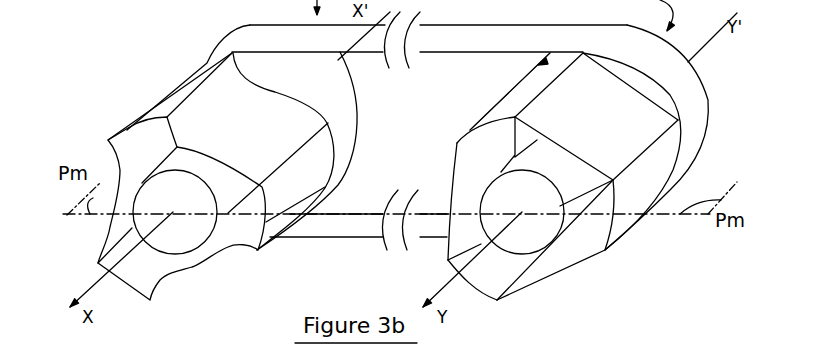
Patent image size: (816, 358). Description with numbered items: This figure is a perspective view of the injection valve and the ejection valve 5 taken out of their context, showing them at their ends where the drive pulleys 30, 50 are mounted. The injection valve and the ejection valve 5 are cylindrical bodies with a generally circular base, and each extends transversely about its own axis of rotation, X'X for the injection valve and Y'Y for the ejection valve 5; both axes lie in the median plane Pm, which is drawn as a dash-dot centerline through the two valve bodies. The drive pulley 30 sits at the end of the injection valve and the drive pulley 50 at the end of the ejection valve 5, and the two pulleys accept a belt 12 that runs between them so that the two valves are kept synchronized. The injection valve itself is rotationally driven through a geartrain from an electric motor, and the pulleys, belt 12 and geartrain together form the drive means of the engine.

The ejection valve 5 is at (483, 82).
The belt 12 is at (429, 131).
The drive pulley 30 is at (357, 118).
The drive pulley 50 is at (643, 81).